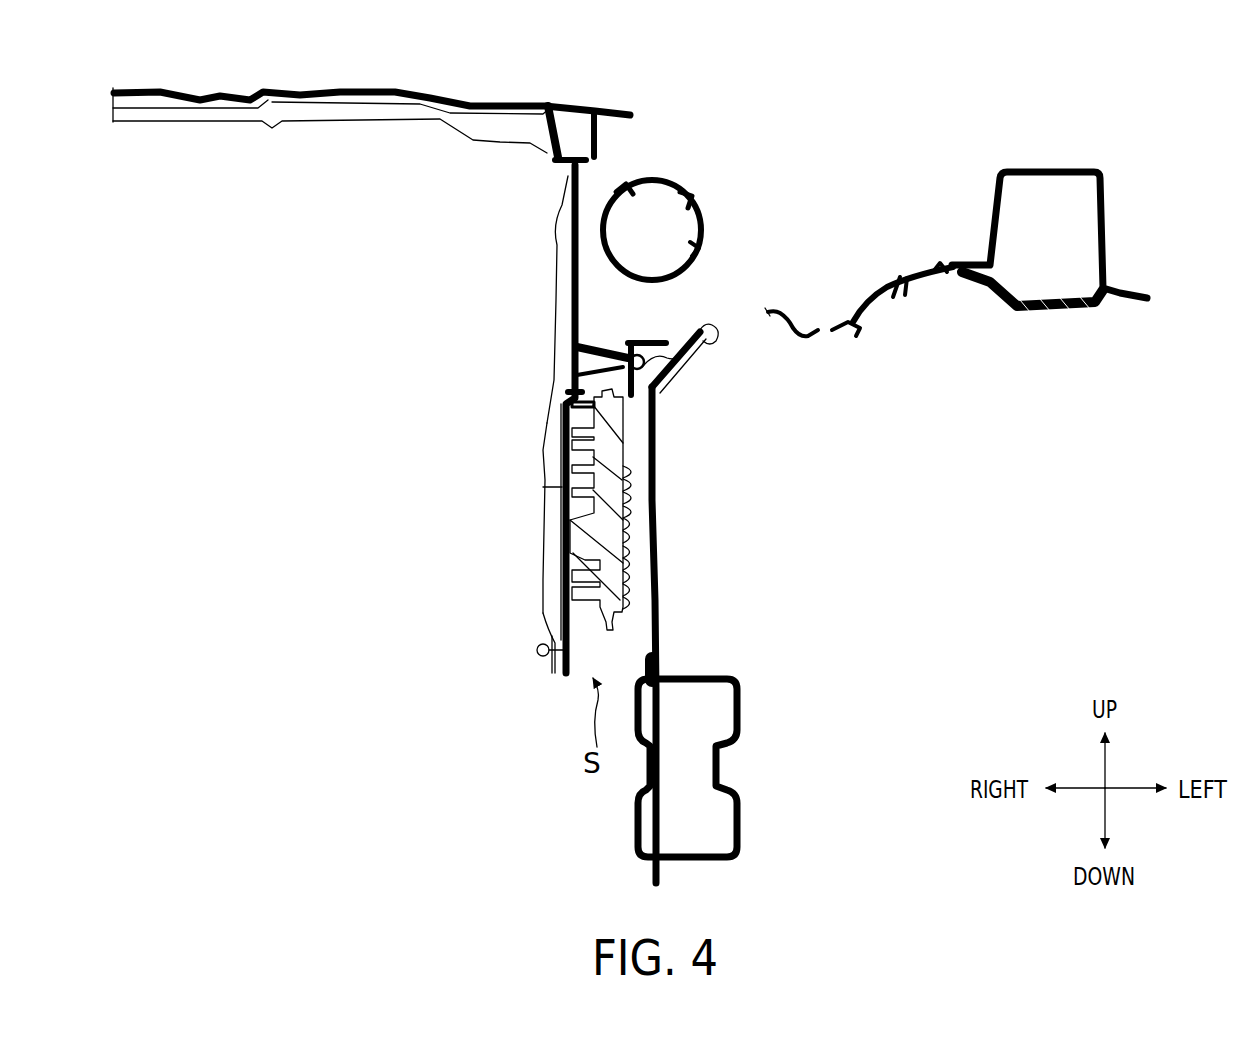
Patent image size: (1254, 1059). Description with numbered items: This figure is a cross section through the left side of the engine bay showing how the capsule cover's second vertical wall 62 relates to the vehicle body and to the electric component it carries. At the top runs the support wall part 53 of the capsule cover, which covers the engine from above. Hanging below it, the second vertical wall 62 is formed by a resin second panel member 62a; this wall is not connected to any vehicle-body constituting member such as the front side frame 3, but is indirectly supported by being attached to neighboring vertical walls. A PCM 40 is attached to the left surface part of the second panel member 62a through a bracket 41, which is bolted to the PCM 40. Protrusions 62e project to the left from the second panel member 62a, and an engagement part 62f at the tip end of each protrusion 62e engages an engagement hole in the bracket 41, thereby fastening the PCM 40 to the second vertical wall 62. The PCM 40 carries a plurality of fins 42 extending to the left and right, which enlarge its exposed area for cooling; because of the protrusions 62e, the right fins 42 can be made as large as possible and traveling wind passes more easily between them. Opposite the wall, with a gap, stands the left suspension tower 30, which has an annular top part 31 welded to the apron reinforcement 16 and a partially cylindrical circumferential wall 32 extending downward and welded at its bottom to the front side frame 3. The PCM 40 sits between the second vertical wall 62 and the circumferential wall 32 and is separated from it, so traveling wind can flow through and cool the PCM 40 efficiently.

The support wall part 53 is at (366, 91).
The second vertical wall 62 is at (579, 419).
The second panel member 62a is at (562, 488).
The protrusions 62e is at (596, 345).
The engagement part 62f is at (670, 372).
The bracket 41 is at (656, 339).
The PCM (Powertrain Control Module) 40 is at (612, 512).
The fins 42 is at (627, 473).
The suspension tower 30 is at (802, 557).
The top part 31 is at (835, 314).
The circumferential wall 32 is at (660, 557).
The front side frame 3 is at (742, 702).
The apron reinforcement 16 is at (1058, 171).